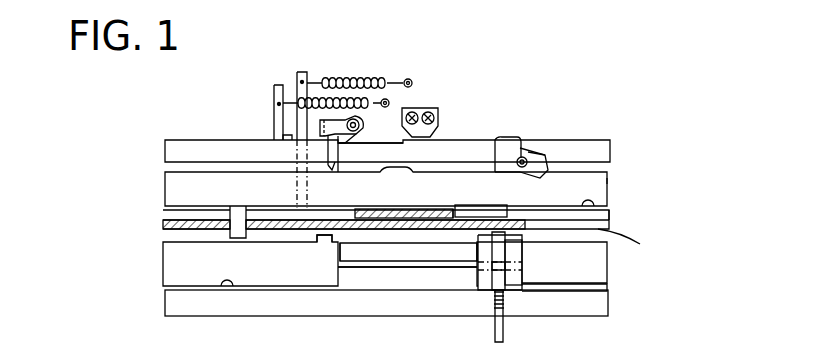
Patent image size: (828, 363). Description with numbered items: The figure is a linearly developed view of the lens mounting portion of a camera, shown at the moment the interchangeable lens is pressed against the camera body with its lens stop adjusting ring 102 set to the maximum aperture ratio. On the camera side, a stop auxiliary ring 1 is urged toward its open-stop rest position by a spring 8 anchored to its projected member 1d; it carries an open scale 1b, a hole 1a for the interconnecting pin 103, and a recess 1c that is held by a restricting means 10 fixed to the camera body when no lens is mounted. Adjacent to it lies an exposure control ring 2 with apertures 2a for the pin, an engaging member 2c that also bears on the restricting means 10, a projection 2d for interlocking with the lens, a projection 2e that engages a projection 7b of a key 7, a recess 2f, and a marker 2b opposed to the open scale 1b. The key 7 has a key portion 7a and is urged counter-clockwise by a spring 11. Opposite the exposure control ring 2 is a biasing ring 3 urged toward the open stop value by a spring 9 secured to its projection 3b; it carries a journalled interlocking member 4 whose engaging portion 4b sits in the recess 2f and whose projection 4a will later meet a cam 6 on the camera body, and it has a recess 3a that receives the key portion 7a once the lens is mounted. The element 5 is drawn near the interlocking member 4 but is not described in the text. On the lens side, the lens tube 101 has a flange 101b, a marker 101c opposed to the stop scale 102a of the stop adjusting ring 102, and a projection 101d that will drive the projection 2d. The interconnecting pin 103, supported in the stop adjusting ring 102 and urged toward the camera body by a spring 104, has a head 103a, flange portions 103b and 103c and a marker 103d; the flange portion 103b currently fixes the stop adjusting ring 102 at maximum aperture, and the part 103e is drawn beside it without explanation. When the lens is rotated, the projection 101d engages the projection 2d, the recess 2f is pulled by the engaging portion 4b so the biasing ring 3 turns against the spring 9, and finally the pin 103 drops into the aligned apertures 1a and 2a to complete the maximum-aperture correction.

The stop auxiliary ring 1 is at (163, 220).
The hole 1a is at (367, 229).
The open scale 1b is at (599, 212).
The recess 1c is at (471, 224).
The projected member 1d is at (304, 64).
The exposure control ring 2 is at (165, 186).
The apertures 2a is at (413, 222).
The marker 2b is at (603, 185).
The engaging member 2c is at (472, 208).
The projection 2d is at (234, 207).
The projection 2e is at (404, 199).
The recess 2f is at (521, 176).
The biasing ring 3 is at (165, 150).
The recess 3a is at (361, 130).
The projection 3b is at (278, 84).
The interlocking member 4 is at (512, 146).
The projection 4a is at (497, 137).
The engaging portion 4b is at (586, 194).
The pawl 5 is at (528, 152).
The cam 6 is at (418, 108).
The key 7 is at (327, 170).
The key portion 7a is at (291, 138).
The projection 7b is at (345, 170).
The spring 8 is at (328, 76).
The spring 9 is at (340, 96).
The restricting means 10 is at (484, 201).
The spring 11 is at (370, 153).
The lens tube 101 is at (164, 258).
The flange 101b is at (390, 270).
The marker 101c is at (226, 282).
The projection 101d is at (322, 238).
The lens stop adjusting ring 102 is at (166, 301).
The stop scale 102a is at (254, 302).
The interconnecting pin 103 is at (495, 318).
The head 103a is at (522, 242).
The flange portion 103b is at (518, 264).
The flange portion 103c is at (493, 297).
The marker 103d is at (503, 325).
The plate 103e is at (608, 290).
The spring 104 is at (518, 292).